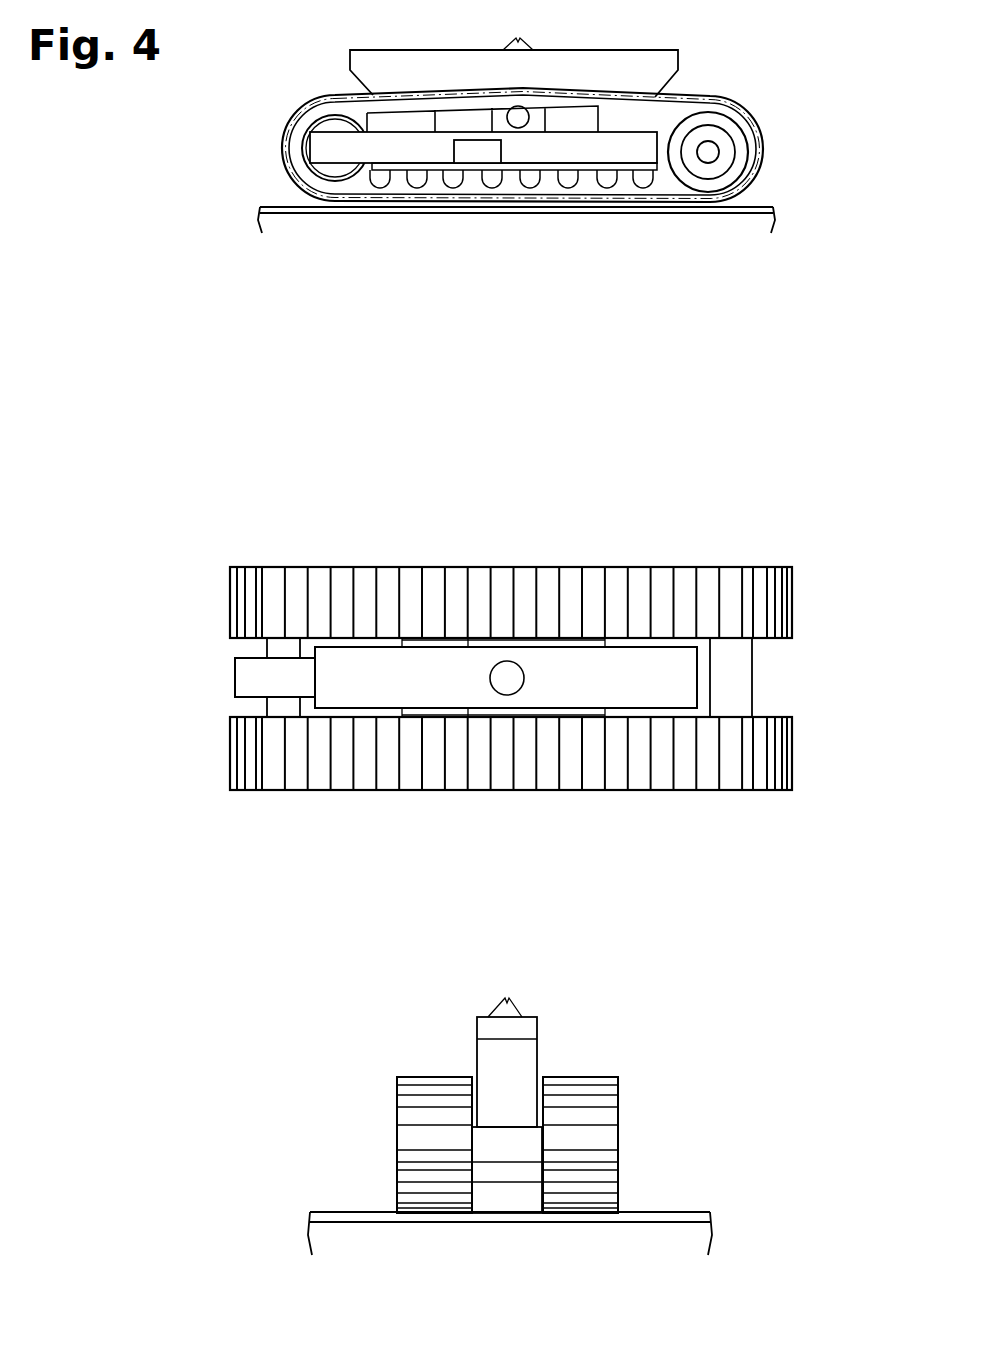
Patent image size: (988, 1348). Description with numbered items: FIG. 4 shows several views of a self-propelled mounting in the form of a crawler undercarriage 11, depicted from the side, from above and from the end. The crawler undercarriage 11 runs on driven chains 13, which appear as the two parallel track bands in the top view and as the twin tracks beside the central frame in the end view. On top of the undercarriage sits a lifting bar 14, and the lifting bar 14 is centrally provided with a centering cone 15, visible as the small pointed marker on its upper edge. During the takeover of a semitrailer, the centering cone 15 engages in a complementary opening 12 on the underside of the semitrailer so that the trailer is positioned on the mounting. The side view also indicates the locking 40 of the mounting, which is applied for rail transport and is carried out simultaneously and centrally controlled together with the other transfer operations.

The crawler undercarriage 11 is at (750, 165).
The complementary opening 12 is at (403, 120).
The driven chains 13 is at (790, 603).
The lifting bar 14 is at (633, 65).
The centering cone 15 is at (518, 47).
The locking 40 is at (475, 152).